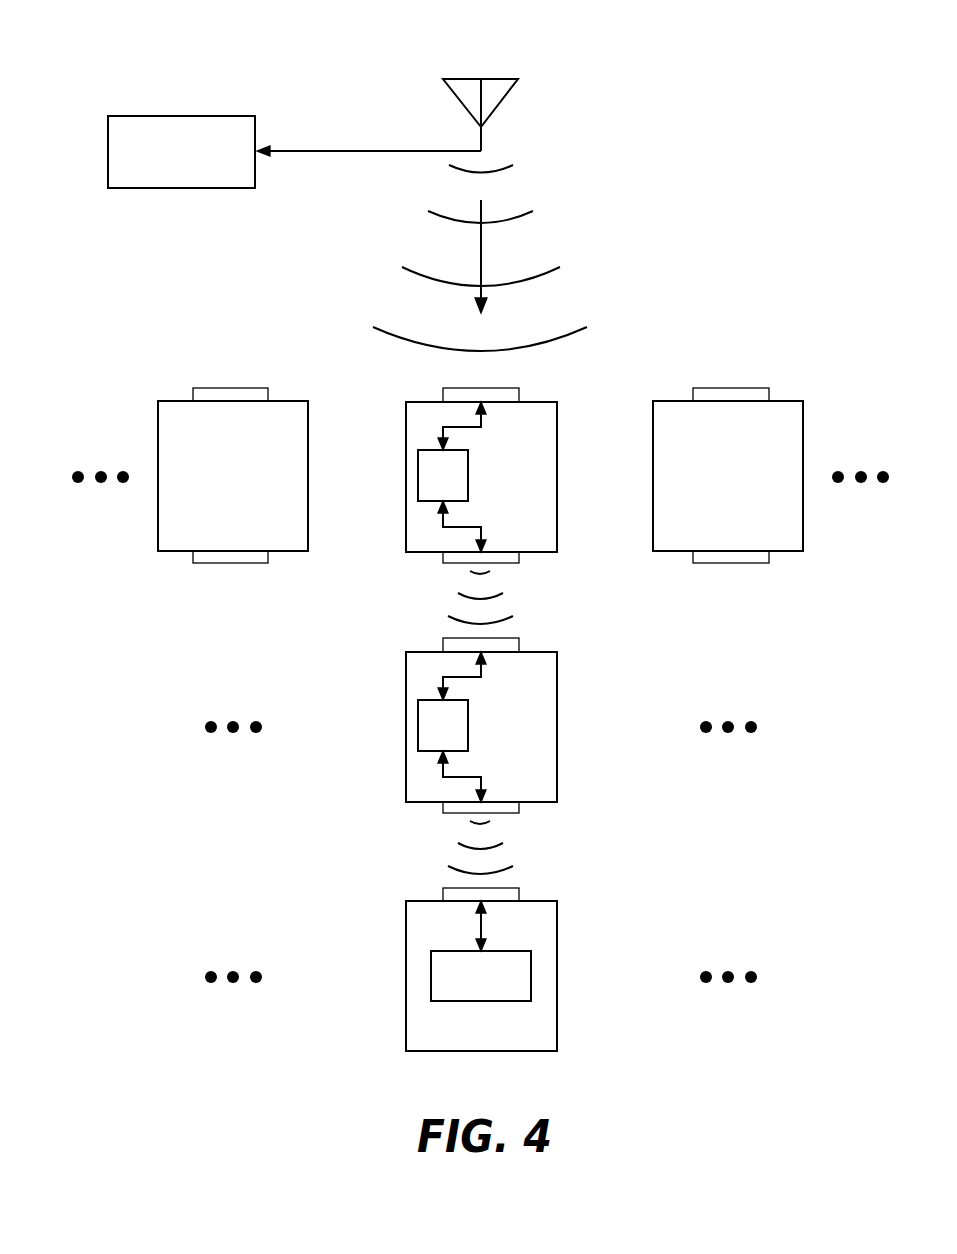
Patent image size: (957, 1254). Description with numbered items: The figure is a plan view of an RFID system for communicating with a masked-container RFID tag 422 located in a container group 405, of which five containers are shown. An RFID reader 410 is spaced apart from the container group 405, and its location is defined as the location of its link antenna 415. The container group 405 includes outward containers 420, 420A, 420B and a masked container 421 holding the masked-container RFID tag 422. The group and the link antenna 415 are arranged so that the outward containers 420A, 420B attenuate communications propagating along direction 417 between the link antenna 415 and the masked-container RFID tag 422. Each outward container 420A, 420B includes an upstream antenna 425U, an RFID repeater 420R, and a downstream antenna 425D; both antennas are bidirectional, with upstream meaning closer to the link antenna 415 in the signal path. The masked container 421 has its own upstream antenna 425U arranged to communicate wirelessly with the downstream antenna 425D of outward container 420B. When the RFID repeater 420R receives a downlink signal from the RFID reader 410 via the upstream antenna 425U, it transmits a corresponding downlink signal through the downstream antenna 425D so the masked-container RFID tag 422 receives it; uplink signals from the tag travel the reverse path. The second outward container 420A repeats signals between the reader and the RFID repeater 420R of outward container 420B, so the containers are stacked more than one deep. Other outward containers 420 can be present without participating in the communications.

The container group 405 is at (109, 380).
The RFID reader 410 is at (108, 122).
The link antenna 415 is at (481, 79).
The direction 417 is at (481, 250).
The outward container 420 is at (173, 552).
The second outward container 420A is at (406, 476).
The outward container 420B is at (406, 726).
The RFID repeater 420R is at (468, 475).
The masked container 421 is at (406, 976).
The masked-container RFID tag 422 is at (480, 1001).
The upstream antenna 425U is at (443, 396).
The downstream antenna 425D is at (443, 558).